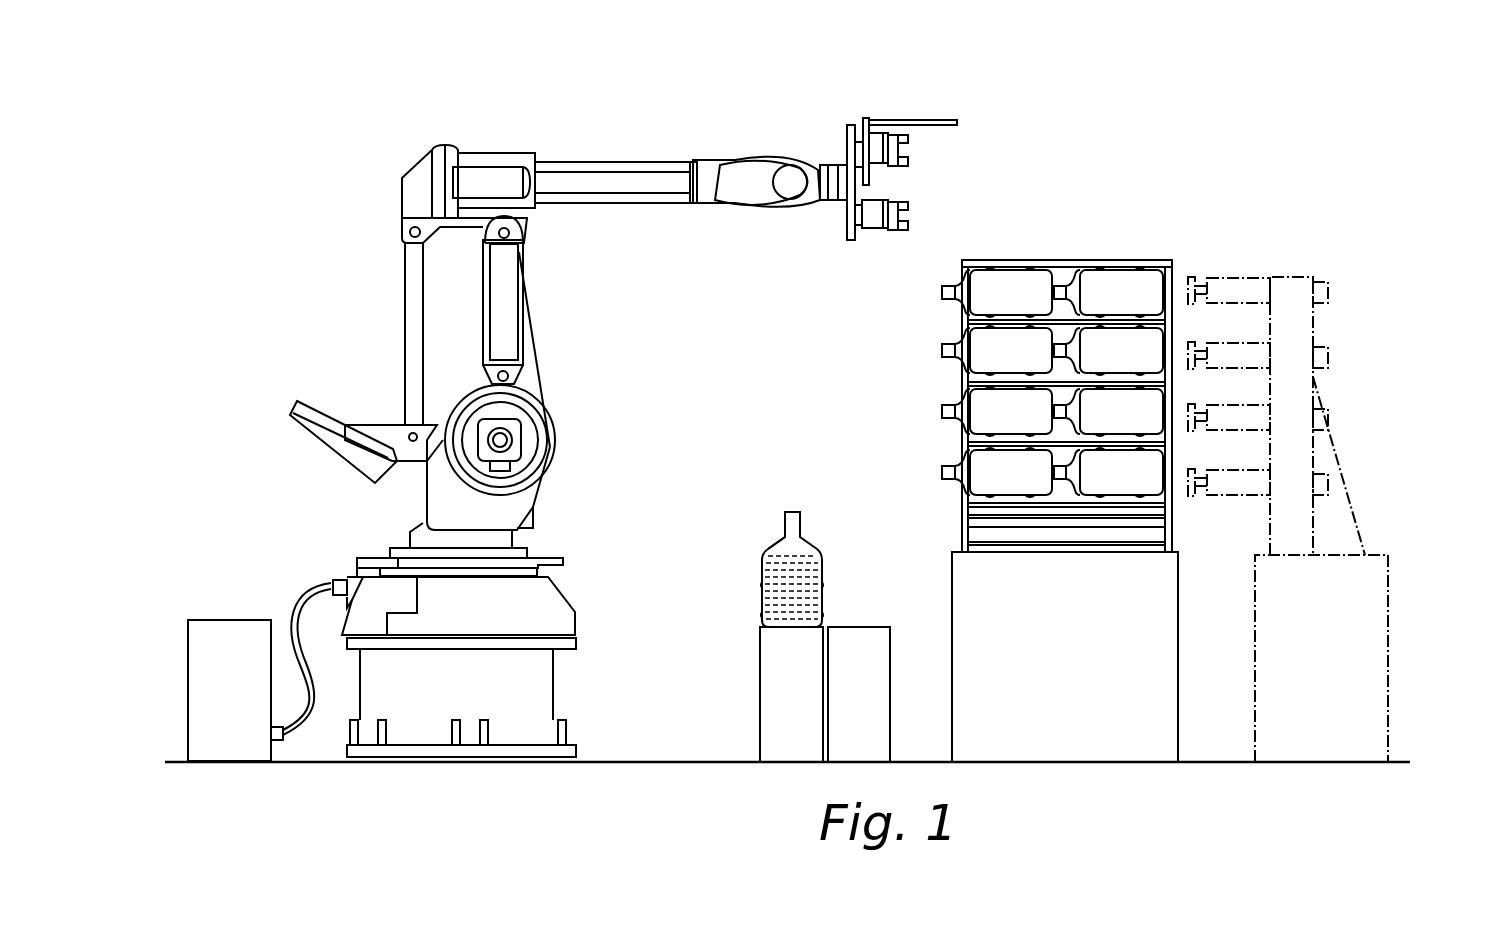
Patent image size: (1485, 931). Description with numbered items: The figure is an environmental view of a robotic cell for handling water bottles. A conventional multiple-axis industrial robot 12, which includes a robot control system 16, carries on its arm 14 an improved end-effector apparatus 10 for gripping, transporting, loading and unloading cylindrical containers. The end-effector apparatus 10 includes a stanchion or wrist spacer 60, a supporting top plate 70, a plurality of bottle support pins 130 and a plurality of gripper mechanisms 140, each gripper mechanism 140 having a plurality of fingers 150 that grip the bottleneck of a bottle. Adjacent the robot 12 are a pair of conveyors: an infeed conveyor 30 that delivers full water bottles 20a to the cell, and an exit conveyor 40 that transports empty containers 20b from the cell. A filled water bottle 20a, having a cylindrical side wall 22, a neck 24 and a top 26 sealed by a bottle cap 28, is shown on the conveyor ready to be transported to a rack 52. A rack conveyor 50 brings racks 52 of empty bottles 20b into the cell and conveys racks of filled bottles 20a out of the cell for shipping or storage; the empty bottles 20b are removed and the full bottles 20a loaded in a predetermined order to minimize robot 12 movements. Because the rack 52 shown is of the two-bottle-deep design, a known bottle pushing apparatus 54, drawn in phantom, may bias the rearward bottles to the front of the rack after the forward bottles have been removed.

The end-effector apparatus 10 is at (851, 160).
The industrial robot 12 is at (386, 285).
The arm 14 is at (620, 122).
The robot control system 16 is at (207, 704).
The full water bottles 20a is at (746, 531).
The empty containers 20b is at (991, 489).
The cylindrical side wall 22 is at (763, 601).
The neck 24 is at (787, 521).
The top 26 is at (793, 510).
The bottle cap 28 is at (807, 518).
The infeed conveyor 30 is at (777, 726).
The exit conveyor 40 is at (845, 726).
The rack conveyor 50 is at (1035, 674).
The rack 52 is at (1057, 371).
The bottle pushing apparatus 54 is at (1299, 262).
The wrist spacer 60 is at (836, 165).
The supporting top plate 70 is at (853, 133).
The bottle support pins 130 is at (900, 120).
The gripper mechanisms 140 is at (865, 248).
The fingers 150 is at (893, 233).